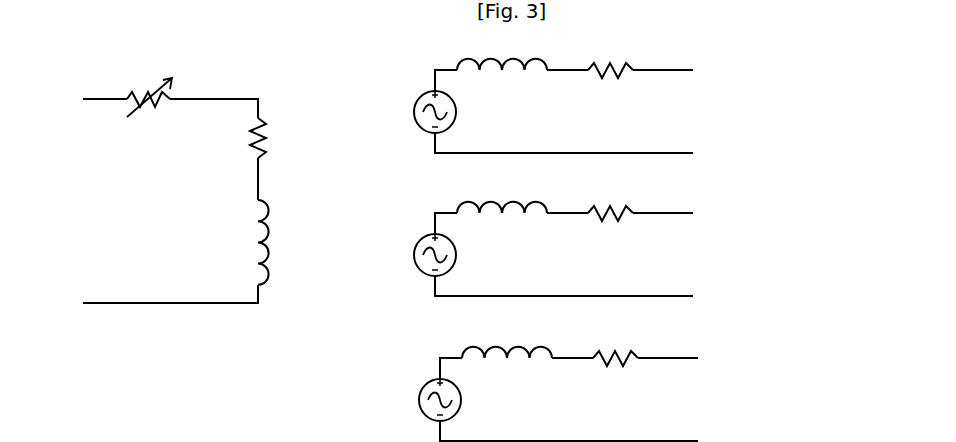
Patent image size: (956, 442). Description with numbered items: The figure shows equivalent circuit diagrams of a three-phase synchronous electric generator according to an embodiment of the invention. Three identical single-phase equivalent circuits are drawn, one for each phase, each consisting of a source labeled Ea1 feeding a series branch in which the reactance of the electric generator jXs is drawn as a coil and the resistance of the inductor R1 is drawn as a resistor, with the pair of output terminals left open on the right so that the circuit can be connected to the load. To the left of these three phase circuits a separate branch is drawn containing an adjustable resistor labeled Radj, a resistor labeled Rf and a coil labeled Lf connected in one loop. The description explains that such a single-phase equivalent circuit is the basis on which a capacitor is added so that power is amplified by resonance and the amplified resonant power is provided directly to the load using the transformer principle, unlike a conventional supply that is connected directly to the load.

The adjustable field resistor Radj is at (149, 82).
The field winding resistance Rf is at (273, 138).
The field winding inductance Lf is at (277, 242).
The reactance of the electric generator jXs is at (504, 196).
The resistance of the inductor R1 is at (613, 199).
The armature induced voltage source Ea1 is at (418, 256).